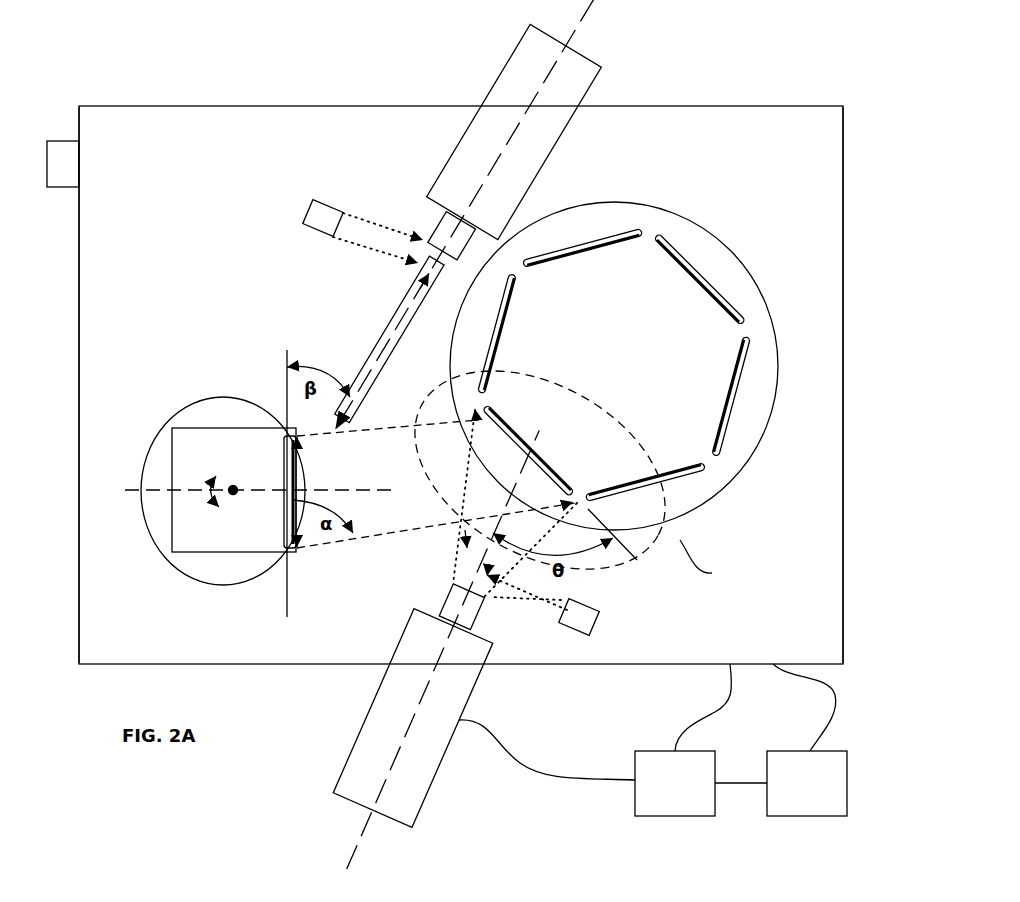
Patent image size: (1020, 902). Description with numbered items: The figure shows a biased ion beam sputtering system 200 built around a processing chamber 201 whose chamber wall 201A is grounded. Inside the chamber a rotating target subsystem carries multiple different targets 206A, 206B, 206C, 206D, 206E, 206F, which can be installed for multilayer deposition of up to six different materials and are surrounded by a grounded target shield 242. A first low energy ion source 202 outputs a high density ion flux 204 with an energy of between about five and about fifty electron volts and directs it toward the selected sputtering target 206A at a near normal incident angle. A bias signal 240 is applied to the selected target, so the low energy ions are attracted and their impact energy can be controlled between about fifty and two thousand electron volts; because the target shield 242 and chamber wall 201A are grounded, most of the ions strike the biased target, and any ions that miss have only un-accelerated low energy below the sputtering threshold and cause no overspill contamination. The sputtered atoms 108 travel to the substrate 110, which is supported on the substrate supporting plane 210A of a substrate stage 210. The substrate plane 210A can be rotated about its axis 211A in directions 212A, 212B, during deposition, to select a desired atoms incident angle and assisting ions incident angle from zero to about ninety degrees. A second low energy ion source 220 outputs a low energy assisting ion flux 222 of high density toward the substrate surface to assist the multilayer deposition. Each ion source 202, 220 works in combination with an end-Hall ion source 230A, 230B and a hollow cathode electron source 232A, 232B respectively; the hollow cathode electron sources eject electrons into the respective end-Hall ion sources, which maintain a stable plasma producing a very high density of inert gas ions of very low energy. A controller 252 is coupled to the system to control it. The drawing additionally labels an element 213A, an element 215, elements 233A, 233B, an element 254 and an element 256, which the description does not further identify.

The biased ion beam sputtering system 200 is at (201, 90).
The processing chamber 201 is at (683, 106).
The chamber wall 201A is at (843, 201).
The first ion source 202 is at (450, 733).
The ion flux 204 is at (548, 528).
The sputtering target 206A is at (487, 405).
The target 206B is at (500, 330).
The target 206C is at (625, 230).
The target 206D is at (692, 257).
The target 206E is at (735, 420).
The target 206F is at (697, 477).
The sputtered atoms 108 is at (385, 548).
The substrate 110 is at (302, 560).
The substrate stage 210 is at (205, 553).
The substrate supporting plane 210A is at (297, 470).
The axis 211A is at (213, 477).
The rotation direction 212A is at (218, 492).
The rotation direction 212B is at (155, 480).
The optical axis 213A is at (160, 497).
The rotation stage 215 is at (215, 397).
The second ion source 220 is at (511, 55).
The assisting ion flux 222 is at (375, 335).
The end-Hall ion source 230A is at (445, 600).
The end-Hall ion source 230B is at (426, 213).
The hollow cathode electron source 232A is at (600, 626).
The hollow cathode electron source 232B is at (303, 222).
The illumination beam 233A is at (540, 615).
The illumination beam 233B is at (367, 220).
The bias signal 240 is at (657, 339).
The target shield 242 is at (605, 202).
The controller 252 is at (675, 816).
The bias supply 254 is at (805, 816).
The port 256 is at (68, 141).